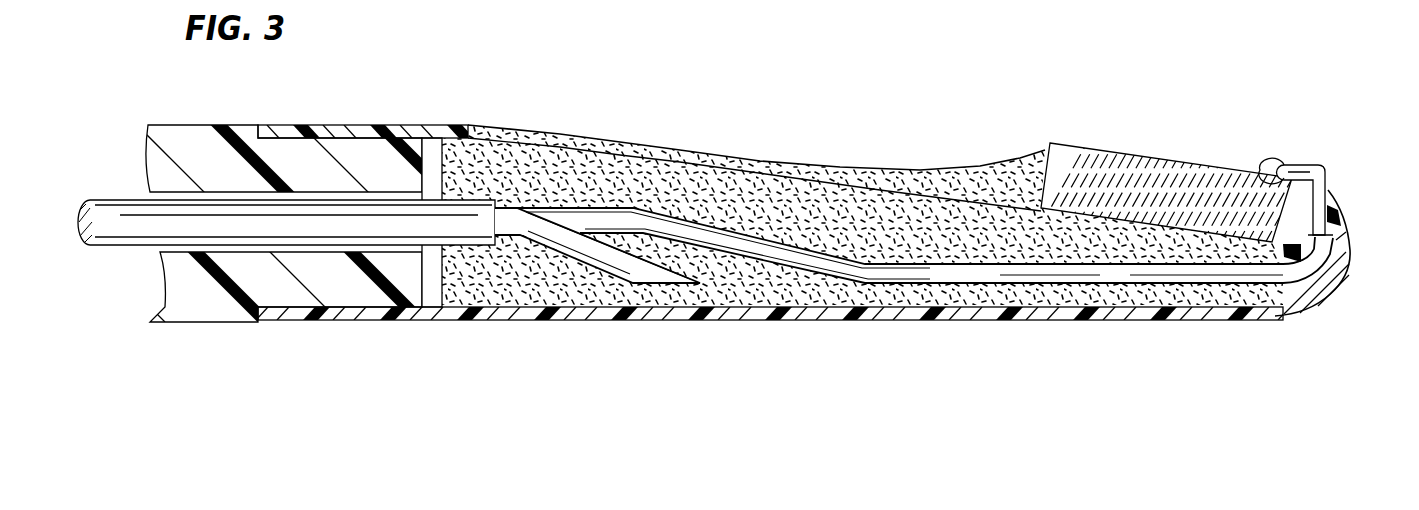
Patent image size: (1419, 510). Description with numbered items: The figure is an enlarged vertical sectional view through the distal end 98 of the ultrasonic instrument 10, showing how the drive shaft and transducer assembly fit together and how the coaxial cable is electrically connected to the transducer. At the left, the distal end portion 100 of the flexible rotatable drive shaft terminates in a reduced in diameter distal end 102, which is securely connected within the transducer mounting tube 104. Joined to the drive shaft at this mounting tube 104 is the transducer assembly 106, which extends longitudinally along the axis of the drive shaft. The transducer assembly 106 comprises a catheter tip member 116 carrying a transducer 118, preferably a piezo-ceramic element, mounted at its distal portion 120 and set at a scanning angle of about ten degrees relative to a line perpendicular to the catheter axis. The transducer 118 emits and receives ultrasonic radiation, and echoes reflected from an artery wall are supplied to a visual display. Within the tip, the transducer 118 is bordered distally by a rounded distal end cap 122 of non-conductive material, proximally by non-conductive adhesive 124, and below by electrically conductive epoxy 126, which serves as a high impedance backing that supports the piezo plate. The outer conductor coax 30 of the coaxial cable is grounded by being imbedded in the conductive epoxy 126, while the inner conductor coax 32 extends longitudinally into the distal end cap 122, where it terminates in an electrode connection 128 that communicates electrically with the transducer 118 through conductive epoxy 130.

The ultrasonic instrument 10 is at (155, 342).
The outer conductor coax 30 is at (645, 282).
The inner conductor coax 32 is at (720, 235).
The distal end 98 is at (293, 347).
The distal end portion 100 is at (200, 158).
The reduced in diameter distal end 102 is at (380, 168).
The transducer mounting tube 104 is at (462, 132).
The transducer assembly 106 is at (1283, 326).
The catheter tip member 116 is at (895, 154).
The transducer 118 is at (1110, 166).
The distal portion 120 is at (1390, 207).
The rounded distal end cap 122 is at (1335, 285).
The non-conductive adhesive 124 is at (972, 180).
The electrically conductive epoxy 126 is at (812, 192).
The electrode connection 128 is at (1327, 172).
The conductive epoxy 130 is at (1265, 163).